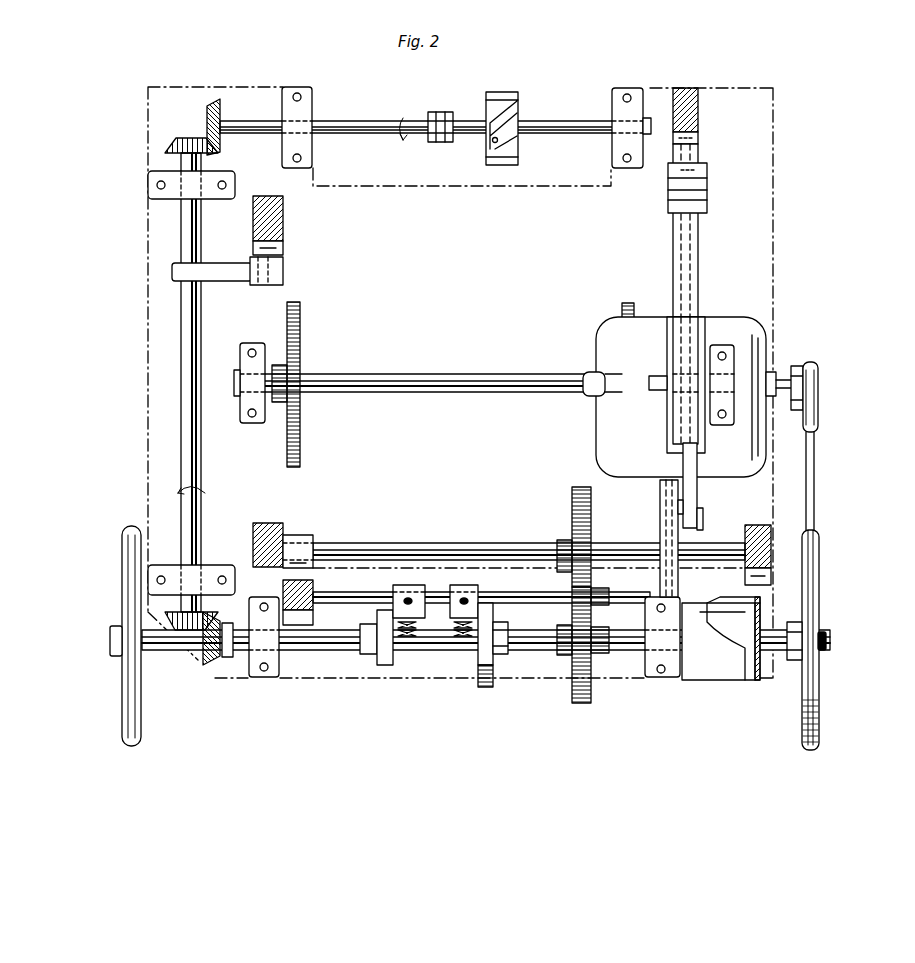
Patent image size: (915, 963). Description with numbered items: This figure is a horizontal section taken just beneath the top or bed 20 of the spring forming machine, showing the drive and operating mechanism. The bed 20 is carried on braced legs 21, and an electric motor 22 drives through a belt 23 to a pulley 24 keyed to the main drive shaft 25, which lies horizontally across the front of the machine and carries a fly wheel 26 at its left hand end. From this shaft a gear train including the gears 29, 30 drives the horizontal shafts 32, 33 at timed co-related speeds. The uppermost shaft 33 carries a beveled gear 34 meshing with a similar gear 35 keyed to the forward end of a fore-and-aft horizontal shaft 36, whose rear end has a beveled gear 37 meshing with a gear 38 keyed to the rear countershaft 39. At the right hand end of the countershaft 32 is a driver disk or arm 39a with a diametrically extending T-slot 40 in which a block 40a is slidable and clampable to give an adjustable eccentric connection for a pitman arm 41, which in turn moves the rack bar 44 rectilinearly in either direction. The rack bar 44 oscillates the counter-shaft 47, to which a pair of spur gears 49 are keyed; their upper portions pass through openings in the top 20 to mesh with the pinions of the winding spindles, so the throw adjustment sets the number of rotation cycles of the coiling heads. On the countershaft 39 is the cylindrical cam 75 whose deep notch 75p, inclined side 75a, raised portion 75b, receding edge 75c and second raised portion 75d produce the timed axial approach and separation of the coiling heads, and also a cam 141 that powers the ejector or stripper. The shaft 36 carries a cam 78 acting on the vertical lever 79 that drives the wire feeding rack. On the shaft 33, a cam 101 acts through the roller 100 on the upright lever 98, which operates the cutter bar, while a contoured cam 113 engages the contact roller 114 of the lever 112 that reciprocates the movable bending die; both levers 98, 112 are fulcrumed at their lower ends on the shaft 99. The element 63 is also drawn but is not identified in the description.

The top or bed 20 is at (775, 270).
The legs 21 is at (699, 118).
The electric motor 22 is at (760, 335).
The belt 23 is at (818, 454).
The pulley 24 is at (819, 552).
The main drive shaft 25 is at (826, 638).
The fly wheel 26 is at (122, 588).
The gear 29 is at (574, 487).
The gear 30 is at (581, 703).
The countershaft 32 is at (506, 543).
The shaft 33 is at (532, 650).
The beveled gear 34 is at (212, 665).
The beveled gear 35 is at (180, 630).
The horizontal shaft 36 is at (180, 458).
The beveled gear 37 is at (172, 148).
The beveled gear 38 is at (212, 106).
The countershaft 39 is at (366, 126).
The driver disk or arm 39a is at (678, 582).
The slotted way or T-slot 40 is at (670, 556).
The block 40a is at (662, 522).
The pitman arm 41 is at (698, 492).
The rack bar 44 is at (699, 243).
The counter-shaft 47 is at (530, 374).
The spur gears 49 is at (301, 316).
The cam unit 63 is at (728, 680).
The cylindrical cam 75 is at (503, 98).
The inclined side 75a is at (499, 100).
The raised portion 75b is at (518, 106).
The receding edge portion 75c is at (518, 138).
The raised portion 75d is at (512, 158).
The deep notch 75p is at (492, 150).
The cam 78 is at (214, 281).
The lever 79 is at (283, 272).
The upright lever 98 is at (398, 586).
The shaft 99 is at (533, 594).
The cam engaging roller 100 is at (378, 612).
The cam 101 is at (378, 664).
The lever 112 is at (466, 586).
The cam 113 is at (478, 680).
The contact roller 114 is at (486, 604).
The cam 141 is at (438, 112).